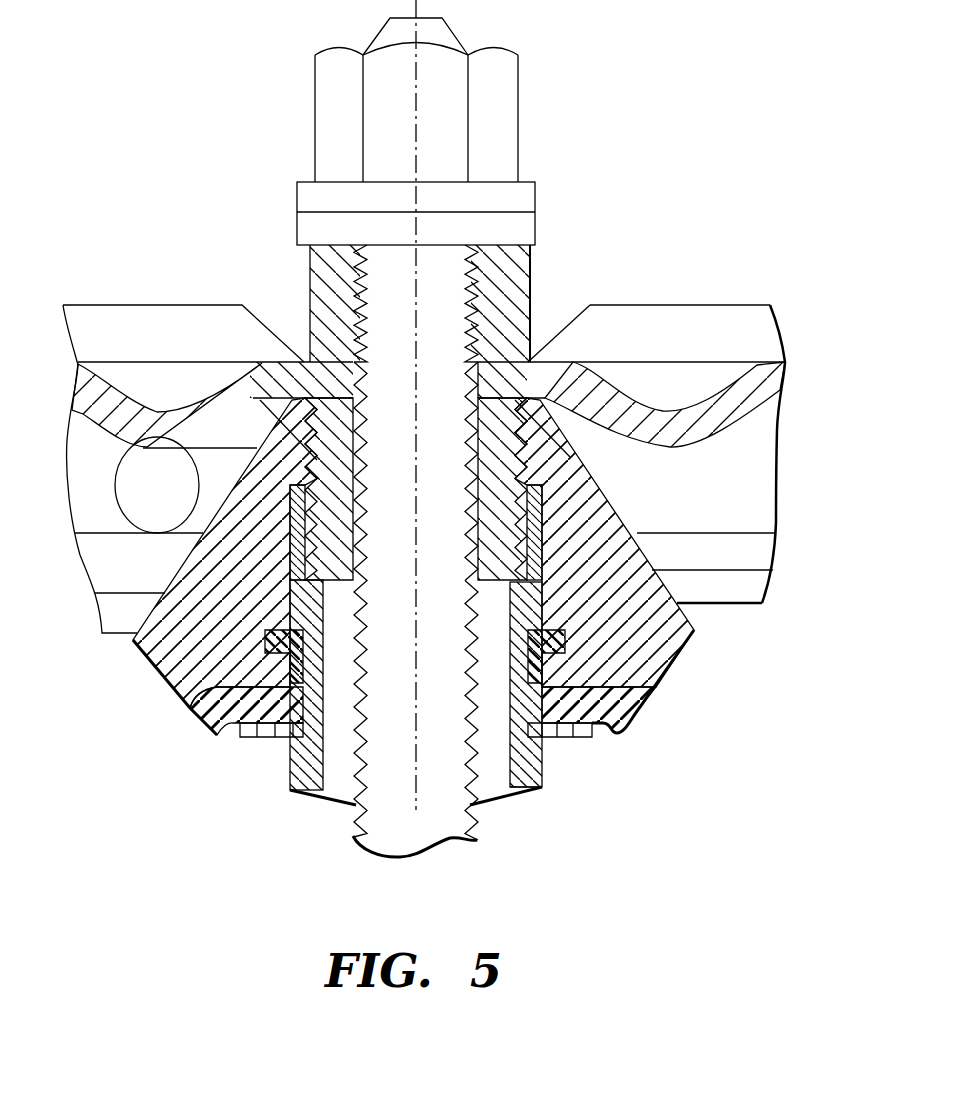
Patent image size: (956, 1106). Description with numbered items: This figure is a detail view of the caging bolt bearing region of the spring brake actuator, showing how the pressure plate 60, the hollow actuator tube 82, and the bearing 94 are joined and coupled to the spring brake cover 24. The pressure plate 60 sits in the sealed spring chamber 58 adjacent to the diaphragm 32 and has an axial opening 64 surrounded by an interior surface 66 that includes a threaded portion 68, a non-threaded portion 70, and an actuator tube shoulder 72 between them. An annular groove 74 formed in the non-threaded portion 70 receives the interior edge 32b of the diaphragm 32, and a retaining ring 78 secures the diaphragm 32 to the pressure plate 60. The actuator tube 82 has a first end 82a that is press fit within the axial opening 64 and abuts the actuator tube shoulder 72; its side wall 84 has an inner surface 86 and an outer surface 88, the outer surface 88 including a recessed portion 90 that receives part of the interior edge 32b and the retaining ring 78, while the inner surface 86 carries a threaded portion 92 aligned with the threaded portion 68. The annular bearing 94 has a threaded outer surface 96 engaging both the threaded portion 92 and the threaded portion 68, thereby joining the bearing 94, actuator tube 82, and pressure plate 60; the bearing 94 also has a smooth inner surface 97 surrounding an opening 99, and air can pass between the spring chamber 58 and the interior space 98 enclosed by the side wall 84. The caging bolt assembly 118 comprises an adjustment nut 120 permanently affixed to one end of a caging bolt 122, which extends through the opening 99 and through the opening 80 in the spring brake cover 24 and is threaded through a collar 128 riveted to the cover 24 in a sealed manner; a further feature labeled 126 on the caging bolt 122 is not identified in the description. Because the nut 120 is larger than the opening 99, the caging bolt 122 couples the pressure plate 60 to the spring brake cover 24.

The caging bolt assembly 118 is at (290, 103).
The adjustment nut 120 is at (505, 78).
The caging bolt 122 is at (452, 274).
The sleeve threads 126 is at (462, 405).
The collar 128 is at (317, 262).
The bearing 94 is at (327, 420).
The threaded outer surface 96 is at (250, 408).
The opening 80 is at (355, 368).
The threaded portion 68 is at (558, 400).
The spring brake cover 24 is at (762, 382).
The spring chamber 58 is at (747, 467).
The actuator tube shoulder 72 is at (570, 457).
The inner surface 86 is at (565, 470).
The outer surface 88 is at (575, 503).
The axial opening 64 is at (617, 526).
The interior surface 66 is at (607, 557).
The non-threaded portion 70 is at (573, 598).
The pressure plate 60 is at (682, 633).
The annular groove 74 is at (552, 648).
The interior edge 32b is at (640, 705).
The side wall 84 is at (530, 772).
The actuator tube 82 is at (528, 787).
The interior space 98 is at (495, 782).
The opening 99 is at (473, 560).
The smooth inner surface 97 is at (473, 485).
The threaded portion 92 is at (310, 528).
The recessed portion 90 is at (305, 705).
The first end 82a is at (290, 592).
The diaphragm 32 is at (200, 717).
The retaining ring 78 is at (267, 737).